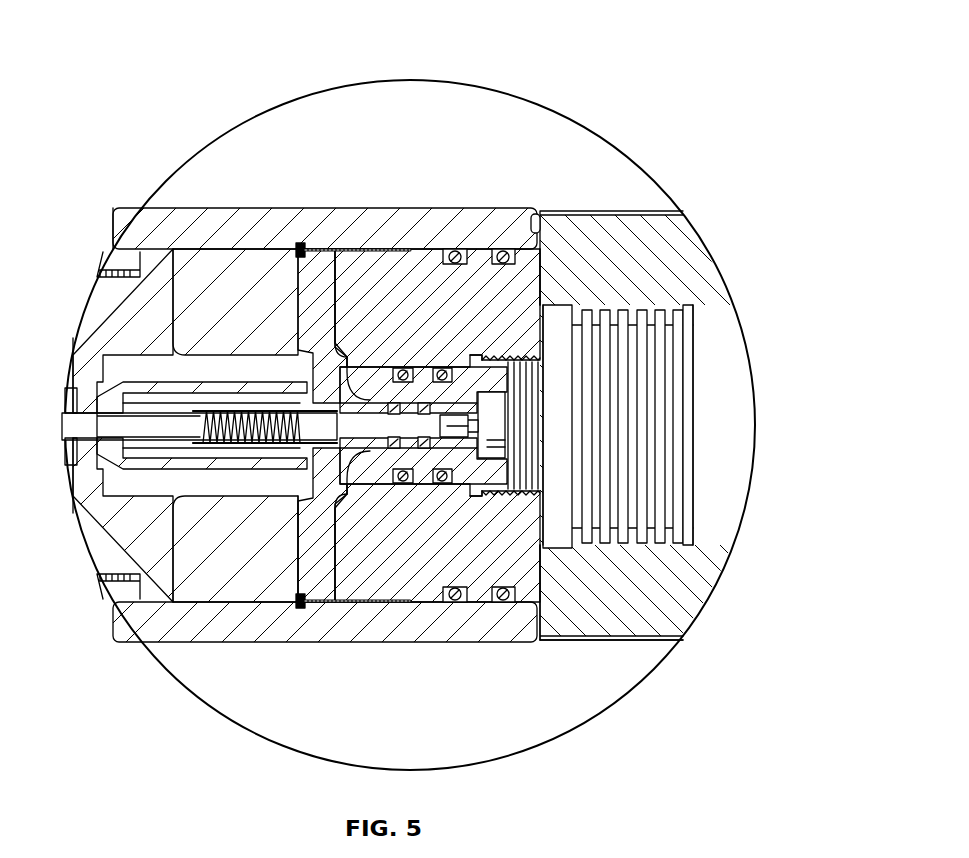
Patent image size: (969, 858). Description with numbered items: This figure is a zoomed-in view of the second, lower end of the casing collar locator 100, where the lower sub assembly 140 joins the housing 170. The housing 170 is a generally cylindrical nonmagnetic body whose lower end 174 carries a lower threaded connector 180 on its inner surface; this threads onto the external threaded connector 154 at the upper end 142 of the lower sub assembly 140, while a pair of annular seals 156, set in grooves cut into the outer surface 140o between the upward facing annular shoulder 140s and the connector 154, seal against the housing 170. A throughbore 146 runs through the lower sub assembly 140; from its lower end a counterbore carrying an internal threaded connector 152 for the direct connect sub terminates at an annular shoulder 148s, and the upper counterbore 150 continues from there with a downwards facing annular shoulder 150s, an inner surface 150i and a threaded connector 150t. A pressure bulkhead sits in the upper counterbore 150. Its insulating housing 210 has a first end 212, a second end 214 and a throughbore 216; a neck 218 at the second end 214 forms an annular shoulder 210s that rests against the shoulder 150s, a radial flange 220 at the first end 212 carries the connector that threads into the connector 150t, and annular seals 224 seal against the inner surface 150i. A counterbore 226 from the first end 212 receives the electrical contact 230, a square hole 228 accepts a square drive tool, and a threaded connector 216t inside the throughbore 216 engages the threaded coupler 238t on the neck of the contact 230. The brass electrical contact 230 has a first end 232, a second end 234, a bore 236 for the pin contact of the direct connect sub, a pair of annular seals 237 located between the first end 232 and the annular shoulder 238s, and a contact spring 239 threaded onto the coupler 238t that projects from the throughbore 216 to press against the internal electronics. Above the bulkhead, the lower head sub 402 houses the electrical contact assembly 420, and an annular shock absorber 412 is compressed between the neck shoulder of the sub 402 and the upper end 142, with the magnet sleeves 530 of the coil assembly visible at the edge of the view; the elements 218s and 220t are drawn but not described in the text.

The casing collar locator 100 is at (120, 40).
The lower sub assembly 140 is at (592, 224).
The outer surface of lower sub assembly 140o is at (605, 641).
The upward facing annular shoulder 140s is at (541, 618).
The upper end of lower sub assembly 142 is at (290, 300).
The throughbore 146 is at (742, 343).
The annular shoulder 148s is at (535, 300).
The upper counterbore 150 is at (420, 362).
The inner surface of upper counterbore 150i is at (365, 440).
The downwards facing annular shoulder 150s is at (342, 372).
The threaded connector 150t is at (500, 494).
The internal threaded connector 152 is at (693, 538).
The external threaded connector 154 is at (364, 606).
The annular seals 156 is at (507, 606).
The housing 170 is at (205, 218).
The lower end of housing 174 is at (536, 216).
The lower threaded connector 180 is at (300, 243).
The insulating housing 210 is at (517, 358).
The annular shoulder 210s is at (335, 347).
The first end of insulating housing 212 is at (693, 300).
The second end of insulating housing 214 is at (193, 498).
The throughbore of insulating housing 216 is at (398, 372).
The threaded connector 216t is at (366, 400).
The neck 218 is at (297, 505).
The block surface 218s is at (297, 537).
The radial flange 220 is at (508, 264).
The nut face 220t is at (545, 378).
The annular seals 224 is at (445, 482).
The counterbore 226 is at (470, 470).
The square hole 228 is at (505, 443).
The electrical contact 230 is at (478, 356).
The first end of electrical contact 232 is at (548, 398).
The second end of electrical contact 234 is at (293, 410).
The bore 236 is at (548, 418).
The annular seals 237 is at (450, 412).
The annular shoulder 238s is at (396, 448).
The threaded coupler 238t is at (366, 447).
The contact spring 239 is at (242, 410).
The lower head sub 402 is at (96, 328).
The annular shock absorber 412 is at (222, 606).
The electrical contact assembly 420 is at (143, 388).
The magnet sleeves 530 is at (103, 263).